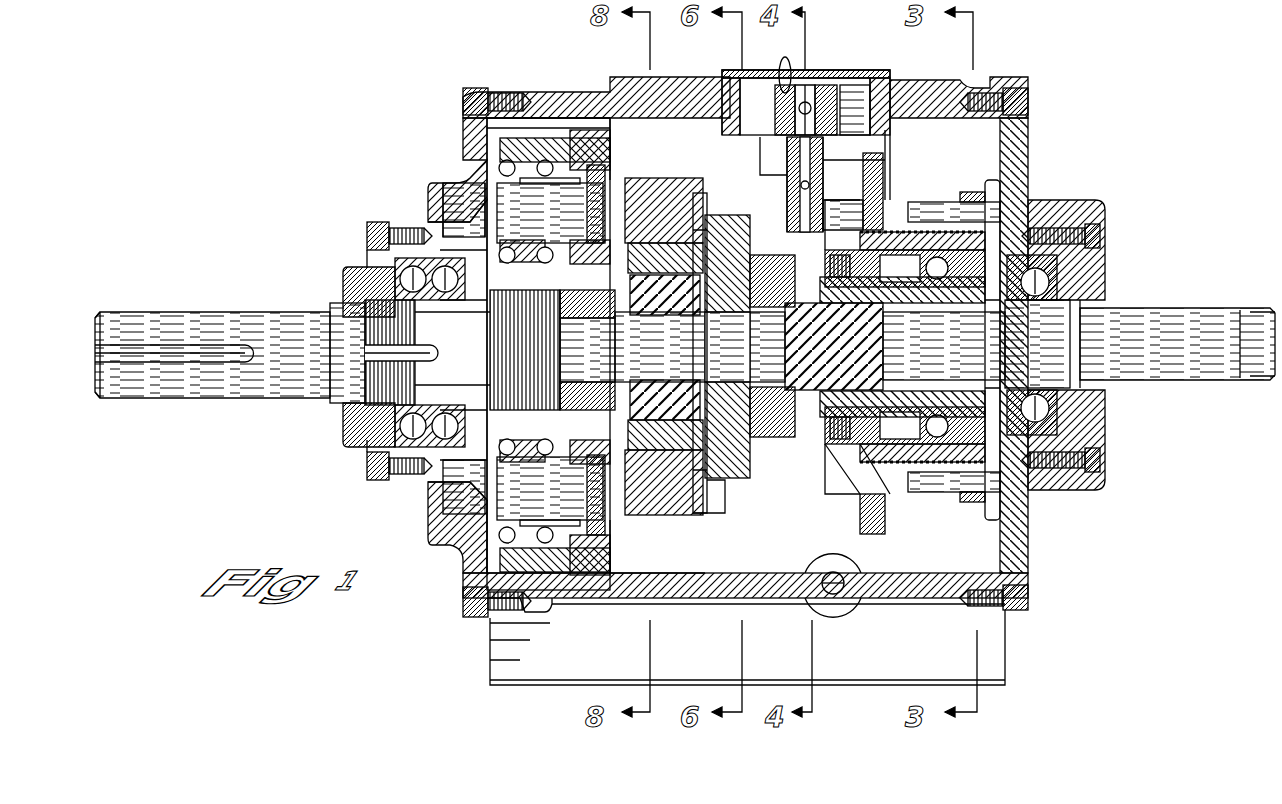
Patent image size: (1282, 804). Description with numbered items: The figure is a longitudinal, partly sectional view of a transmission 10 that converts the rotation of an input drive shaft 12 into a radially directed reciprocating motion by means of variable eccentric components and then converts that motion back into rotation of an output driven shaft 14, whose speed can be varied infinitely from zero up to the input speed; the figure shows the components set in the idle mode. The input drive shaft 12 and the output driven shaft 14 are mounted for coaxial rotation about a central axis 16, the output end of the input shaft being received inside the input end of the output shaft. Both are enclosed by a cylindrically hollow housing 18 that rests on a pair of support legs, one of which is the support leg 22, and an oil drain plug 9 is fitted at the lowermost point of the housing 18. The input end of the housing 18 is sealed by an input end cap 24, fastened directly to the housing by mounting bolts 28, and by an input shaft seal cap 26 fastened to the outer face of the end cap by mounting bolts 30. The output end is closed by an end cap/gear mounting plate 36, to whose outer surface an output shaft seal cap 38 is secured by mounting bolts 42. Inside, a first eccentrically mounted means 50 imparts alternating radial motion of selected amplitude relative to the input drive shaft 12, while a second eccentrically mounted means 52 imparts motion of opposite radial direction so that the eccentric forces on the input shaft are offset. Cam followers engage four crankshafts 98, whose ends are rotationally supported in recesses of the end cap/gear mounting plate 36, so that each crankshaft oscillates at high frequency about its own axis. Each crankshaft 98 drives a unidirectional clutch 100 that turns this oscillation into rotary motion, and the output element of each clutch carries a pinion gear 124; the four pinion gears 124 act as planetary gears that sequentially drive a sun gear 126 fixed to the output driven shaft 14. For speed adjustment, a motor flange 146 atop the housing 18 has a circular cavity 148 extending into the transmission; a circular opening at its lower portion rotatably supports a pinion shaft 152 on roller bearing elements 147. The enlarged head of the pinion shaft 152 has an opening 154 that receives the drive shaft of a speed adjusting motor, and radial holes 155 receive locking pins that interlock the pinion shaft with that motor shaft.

The oil drain plug 9 is at (838, 588).
The transmission 10 is at (1122, 64).
The input drive shaft 12 is at (1180, 322).
The output driven shaft 14 is at (128, 316).
The central axis 16 is at (135, 370).
The housing 18 is at (994, 76).
The support leg 22 is at (1000, 646).
The input end cap 24 is at (1018, 126).
The input shaft seal cap 26 is at (1105, 200).
The mounting bolts 28 is at (462, 104).
The mounting bolts 30 is at (1104, 232).
The end cap/gear mounting plate 36 is at (464, 128).
The output shaft seal cap 38 is at (343, 280).
The mounting bolts 42 is at (366, 236).
The first eccentrically mounted means 50 is at (700, 500).
The second eccentrically mounted means 52 is at (744, 482).
The crankshaft 98 is at (452, 216).
The unidirectional clutch 100 is at (520, 152).
The pinion gear 124 is at (470, 158).
The sun gear 126 is at (500, 328).
The motor flange 146 is at (893, 70).
The roller bearing elements 147 is at (836, 152).
The circular cavity 148 is at (842, 120).
The pinion shaft 152 is at (825, 110).
The opening 154 is at (808, 106).
The radial holes 155 is at (782, 59).